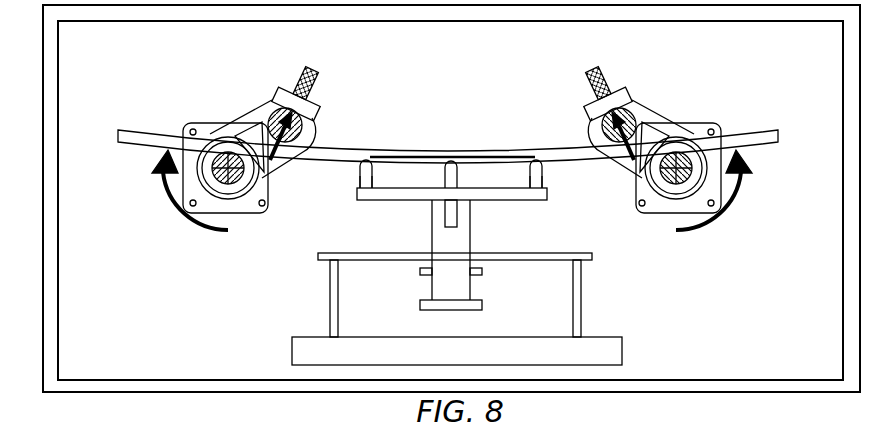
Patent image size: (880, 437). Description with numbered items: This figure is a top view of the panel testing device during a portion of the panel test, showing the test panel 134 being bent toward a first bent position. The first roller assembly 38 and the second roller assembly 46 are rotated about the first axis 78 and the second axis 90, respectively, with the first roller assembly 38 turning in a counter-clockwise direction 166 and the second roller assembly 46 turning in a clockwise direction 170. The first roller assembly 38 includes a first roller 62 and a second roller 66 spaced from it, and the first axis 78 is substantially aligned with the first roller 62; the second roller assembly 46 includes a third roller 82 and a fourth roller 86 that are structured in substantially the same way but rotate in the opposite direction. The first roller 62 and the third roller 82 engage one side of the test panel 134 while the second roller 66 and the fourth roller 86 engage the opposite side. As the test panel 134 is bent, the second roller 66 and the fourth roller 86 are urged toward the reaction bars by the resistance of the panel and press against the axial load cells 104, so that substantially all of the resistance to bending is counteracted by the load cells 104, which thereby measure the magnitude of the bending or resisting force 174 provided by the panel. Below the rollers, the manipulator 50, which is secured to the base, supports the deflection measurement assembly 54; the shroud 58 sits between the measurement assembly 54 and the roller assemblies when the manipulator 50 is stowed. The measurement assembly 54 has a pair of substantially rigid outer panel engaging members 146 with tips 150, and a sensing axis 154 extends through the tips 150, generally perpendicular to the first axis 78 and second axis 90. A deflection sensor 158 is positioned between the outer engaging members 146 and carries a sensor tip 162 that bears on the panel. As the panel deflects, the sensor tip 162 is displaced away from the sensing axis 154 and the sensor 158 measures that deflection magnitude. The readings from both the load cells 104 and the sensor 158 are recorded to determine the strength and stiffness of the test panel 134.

The first roller assembly 38 is at (684, 172).
The second roller assembly 46 is at (244, 108).
The manipulator 50 is at (432, 243).
The deflection measurement assembly 54 is at (366, 199).
The shroud 58 is at (357, 260).
The first roller 62 is at (676, 180).
The second roller 66 is at (612, 140).
The first axis 78 is at (712, 130).
The third roller 82 is at (232, 178).
The fourth roller 86 is at (275, 183).
The second axis 90 is at (230, 170).
The axial load cell 104 is at (283, 92).
The test panel 134 is at (153, 129).
The outer panel engaging members 146 is at (358, 178).
The tips 150 is at (368, 160).
The sensing axis 154 is at (412, 155).
The deflection sensor 158 is at (457, 214).
The sensor tip 162 is at (457, 160).
The counter-clockwise direction 166 is at (740, 218).
The clockwise direction 170 is at (168, 212).
The bending or resisting force 174 is at (332, 110).